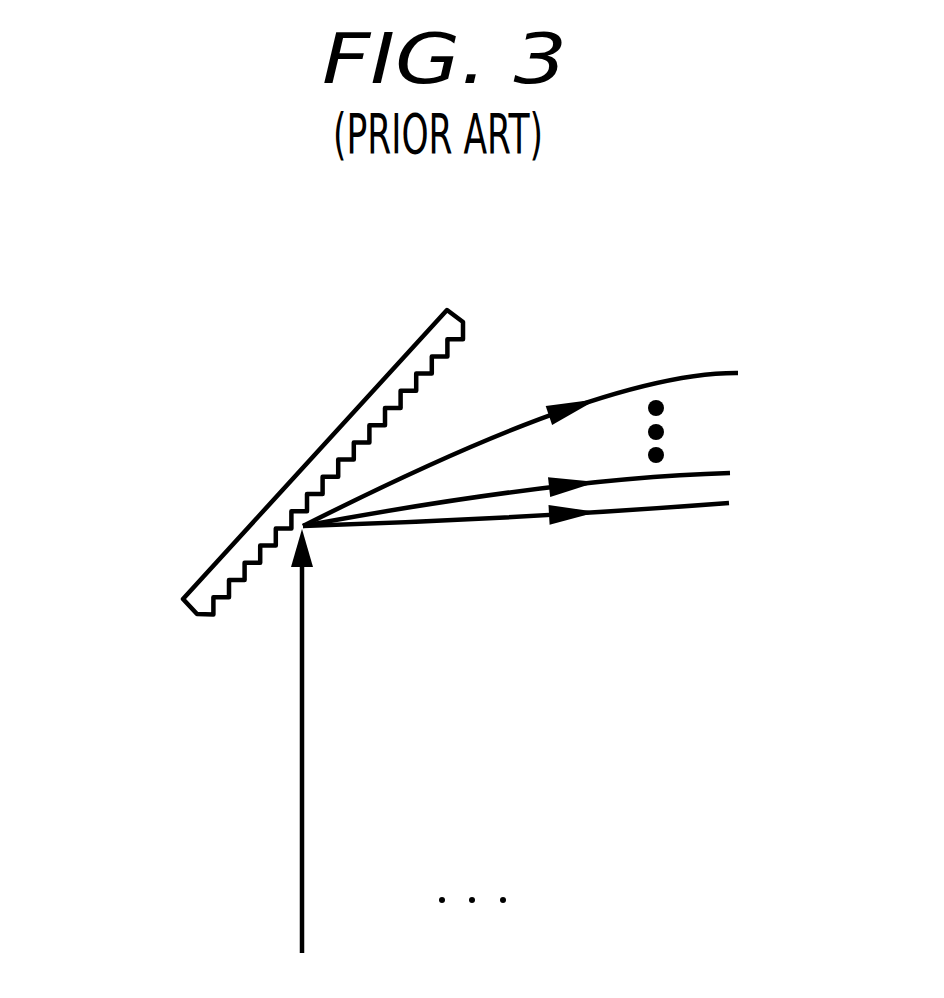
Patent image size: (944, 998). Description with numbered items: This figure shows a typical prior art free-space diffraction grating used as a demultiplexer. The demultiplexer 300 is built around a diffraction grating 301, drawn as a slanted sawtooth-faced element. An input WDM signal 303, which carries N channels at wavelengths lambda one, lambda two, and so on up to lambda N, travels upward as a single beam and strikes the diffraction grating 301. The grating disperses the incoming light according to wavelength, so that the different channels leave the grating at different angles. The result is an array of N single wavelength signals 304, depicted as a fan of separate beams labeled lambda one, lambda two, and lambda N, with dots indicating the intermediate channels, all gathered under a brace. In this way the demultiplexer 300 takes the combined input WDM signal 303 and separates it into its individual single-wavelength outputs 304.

The demultiplexer 300 is at (475, 217).
The diffraction grating 301 is at (318, 450).
The input WDM signal 303 is at (304, 753).
The array of N single wavelength signals 304 is at (760, 340).